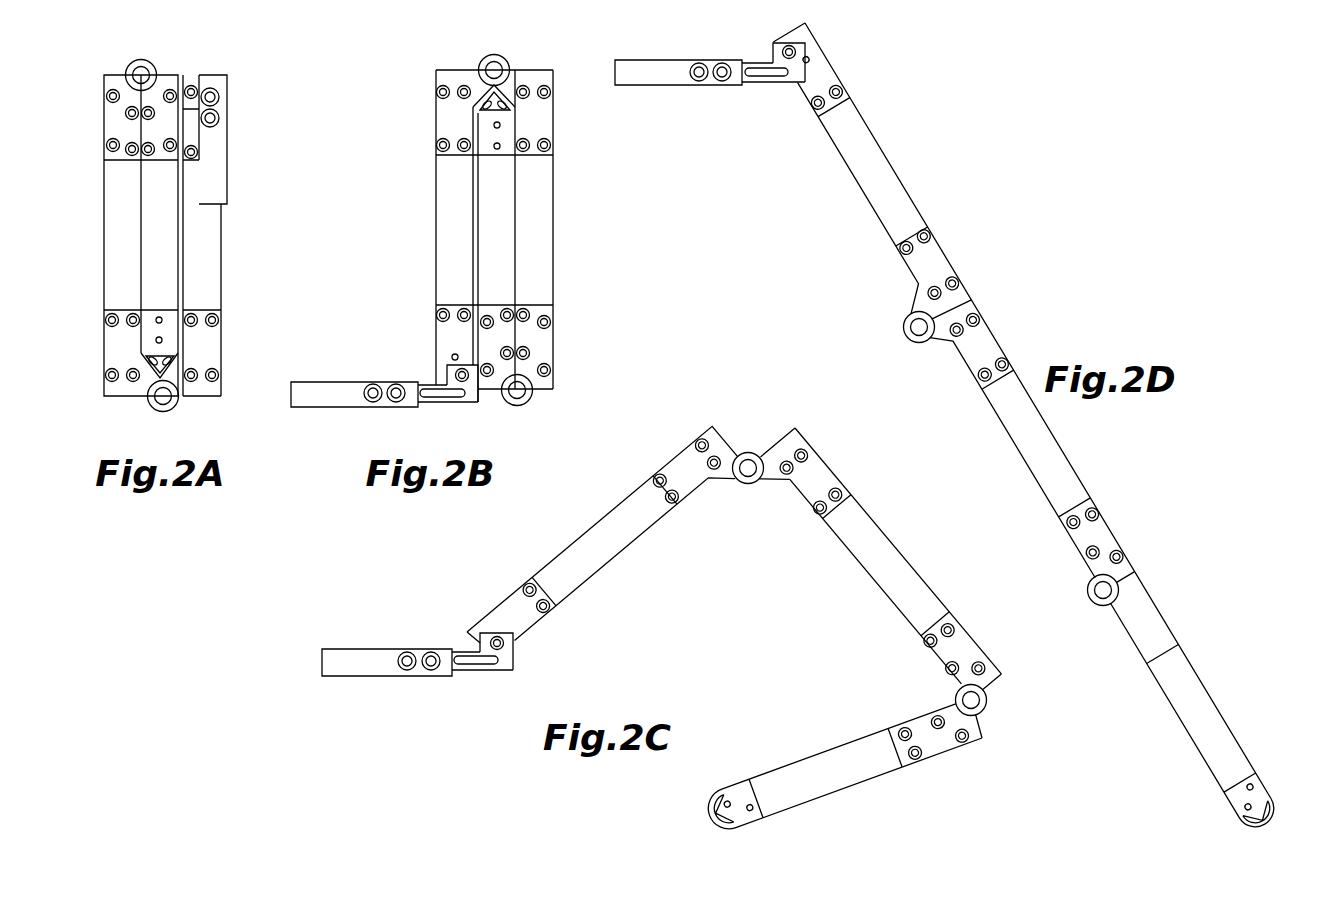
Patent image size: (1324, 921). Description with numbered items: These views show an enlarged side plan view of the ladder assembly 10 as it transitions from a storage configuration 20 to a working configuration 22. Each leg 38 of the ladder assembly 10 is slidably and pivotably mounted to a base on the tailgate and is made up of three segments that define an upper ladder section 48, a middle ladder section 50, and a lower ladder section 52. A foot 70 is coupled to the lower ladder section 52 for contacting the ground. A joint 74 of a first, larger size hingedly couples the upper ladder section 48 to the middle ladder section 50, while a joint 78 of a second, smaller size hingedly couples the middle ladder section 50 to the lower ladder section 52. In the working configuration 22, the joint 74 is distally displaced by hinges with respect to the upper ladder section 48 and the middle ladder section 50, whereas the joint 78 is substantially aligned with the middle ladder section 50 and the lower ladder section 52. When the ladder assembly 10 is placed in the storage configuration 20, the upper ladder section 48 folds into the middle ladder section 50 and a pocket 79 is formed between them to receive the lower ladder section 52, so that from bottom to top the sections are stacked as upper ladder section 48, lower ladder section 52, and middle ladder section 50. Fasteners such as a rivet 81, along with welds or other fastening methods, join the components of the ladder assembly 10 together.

In FIG. 2A, the ladder assembly 10 is at (209, 57).
In FIG. 2B, the ladder assembly 10 is at (543, 57).
In FIG. 2C, the ladder assembly 10 is at (759, 394).
In FIG. 2D, the ladder assembly 10 is at (852, 57).
In FIG. 2A, the storage configuration 20 is at (222, 246).
In FIG. 2B, the storage configuration 20 is at (430, 248).
In FIG. 2D, the working configuration 22 is at (887, 155).
In FIG. 2A, the leg 38 is at (102, 271).
In FIG. 2B, the leg 38 is at (556, 268).
In FIG. 2C, the leg 38 is at (571, 538).
In FIG. 2D, the leg 38 is at (836, 154).
In FIG. 2A, the upper ladder section 48 is at (222, 278).
In FIG. 2B, the upper ladder section 48 is at (436, 280).
In FIG. 2C, the upper ladder section 48 is at (605, 567).
In FIG. 2D, the upper ladder section 48 is at (870, 195).
In FIG. 2A, the middle ladder section 50 is at (104, 213).
In FIG. 2B, the middle ladder section 50 is at (555, 213).
In FIG. 2C, the middle ladder section 50 is at (870, 580).
In FIG. 2D, the middle ladder section 50 is at (1010, 445).
In FIG. 2A, the lower ladder section 52 is at (185, 223).
In FIG. 2B, the lower ladder section 52 is at (474, 225).
In FIG. 2C, the lower ladder section 52 is at (848, 790).
In FIG. 2D, the lower ladder section 52 is at (1170, 725).
In FIG. 2A, the foot 70 is at (176, 368).
In FIG. 2B, the foot 70 is at (505, 95).
In FIG. 2C, the foot 70 is at (700, 805).
In FIG. 2D, the foot 70 is at (1245, 825).
In FIG. 2A, the joint 74 is at (180, 412).
In FIG. 2B, the joint 74 is at (485, 56).
In FIG. 2C, the joint 74 is at (748, 487).
In FIG. 2D, the joint 74 is at (901, 330).
In FIG. 2A, the joint 78 is at (137, 57).
In FIG. 2B, the joint 78 is at (526, 408).
In FIG. 2C, the joint 78 is at (989, 703).
In FIG. 2D, the joint 78 is at (1086, 594).
In FIG. 2A, the pocket 79 is at (150, 352).
In FIG. 2B, the pocket 79 is at (490, 110).
In FIG. 2C, the pocket 79 is at (770, 484).
In FIG. 2C, the rivet 81 is at (953, 625).